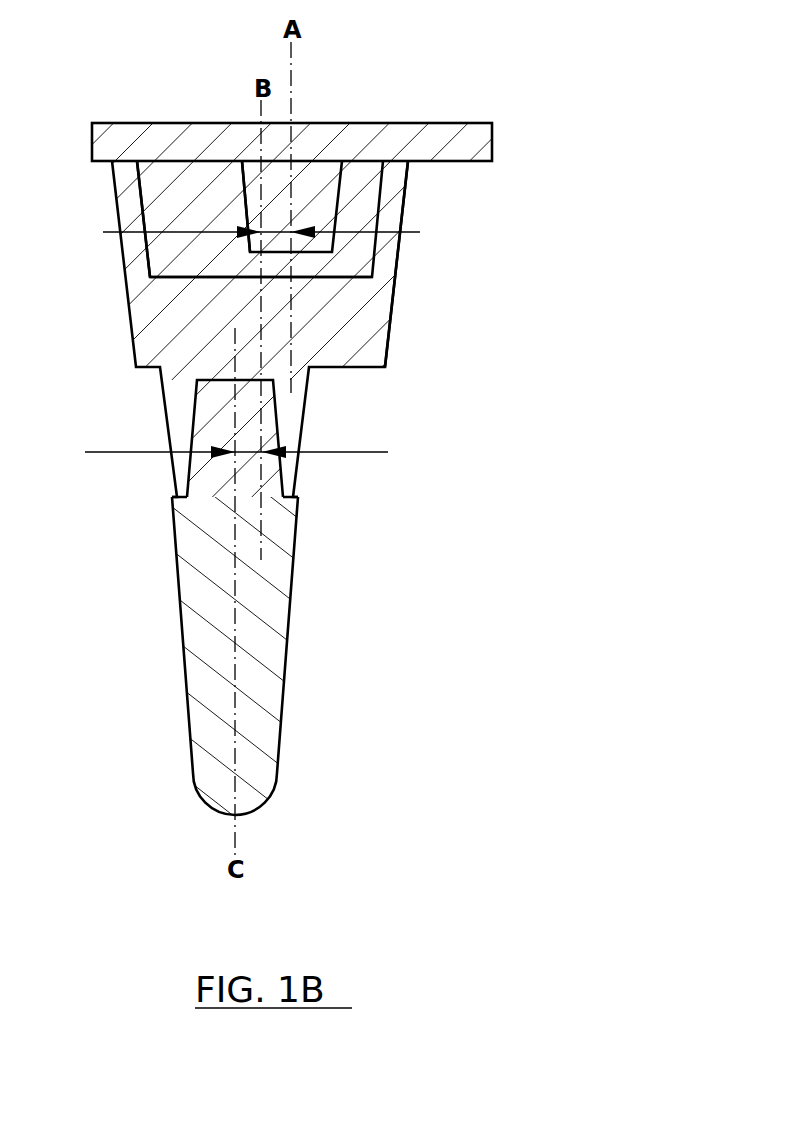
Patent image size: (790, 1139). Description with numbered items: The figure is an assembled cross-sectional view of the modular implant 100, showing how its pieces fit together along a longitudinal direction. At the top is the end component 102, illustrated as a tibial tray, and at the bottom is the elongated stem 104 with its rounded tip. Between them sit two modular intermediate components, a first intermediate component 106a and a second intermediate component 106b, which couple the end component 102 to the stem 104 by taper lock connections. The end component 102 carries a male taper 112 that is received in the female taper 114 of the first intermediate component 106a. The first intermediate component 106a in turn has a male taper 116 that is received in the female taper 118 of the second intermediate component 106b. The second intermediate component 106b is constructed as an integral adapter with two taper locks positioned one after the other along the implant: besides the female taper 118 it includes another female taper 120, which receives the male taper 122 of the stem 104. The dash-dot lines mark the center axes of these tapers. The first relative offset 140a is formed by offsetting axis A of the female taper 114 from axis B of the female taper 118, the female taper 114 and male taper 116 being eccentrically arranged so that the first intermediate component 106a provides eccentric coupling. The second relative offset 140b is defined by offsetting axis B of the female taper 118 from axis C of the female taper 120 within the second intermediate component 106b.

The modular implant 100 is at (584, 199).
The end component 102 is at (428, 68).
The stem 104 is at (282, 549).
The first intermediate component 106a is at (363, 253).
The second intermediate component 106b is at (398, 211).
The male taper 112 is at (312, 190).
The female taper 114 is at (256, 212).
The male taper 116 is at (132, 218).
The female taper 118 is at (150, 258).
The female taper 120 is at (197, 421).
The male taper 122 is at (198, 472).
The first relative offset 140a is at (294, 234).
The second relative offset 140b is at (269, 452).